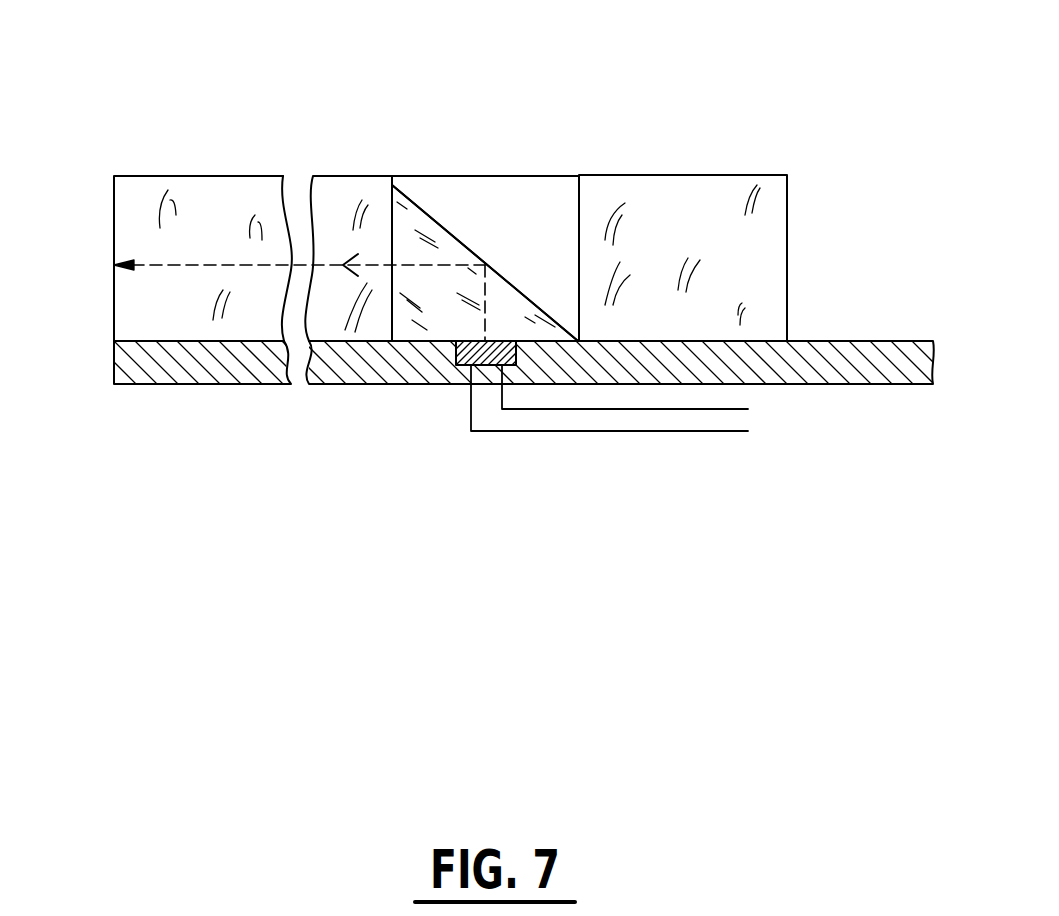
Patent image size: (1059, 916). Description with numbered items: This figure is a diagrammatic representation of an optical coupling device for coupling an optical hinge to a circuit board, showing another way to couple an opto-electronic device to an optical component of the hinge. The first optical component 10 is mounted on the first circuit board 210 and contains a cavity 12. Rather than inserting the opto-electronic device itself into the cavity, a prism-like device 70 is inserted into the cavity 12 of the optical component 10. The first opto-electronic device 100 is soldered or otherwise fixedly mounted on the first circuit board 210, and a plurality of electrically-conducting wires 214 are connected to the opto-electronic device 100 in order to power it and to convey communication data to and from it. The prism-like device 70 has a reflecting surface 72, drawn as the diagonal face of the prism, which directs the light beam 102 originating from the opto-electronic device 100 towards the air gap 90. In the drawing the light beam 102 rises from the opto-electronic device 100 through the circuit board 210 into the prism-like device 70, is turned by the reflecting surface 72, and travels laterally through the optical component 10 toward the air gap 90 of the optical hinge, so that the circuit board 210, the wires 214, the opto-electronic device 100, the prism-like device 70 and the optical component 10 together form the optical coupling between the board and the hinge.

The first optical component 10 is at (701, 213).
The cavity 12 is at (548, 205).
The prism-like device 70 is at (416, 228).
The reflecting surface 72 is at (506, 258).
The air gap 90 is at (93, 248).
The first opto-electronic device 100 is at (459, 362).
The light beam 102 is at (331, 262).
The first circuit board 210 is at (848, 348).
The electrically-conducting wires 214 is at (755, 420).